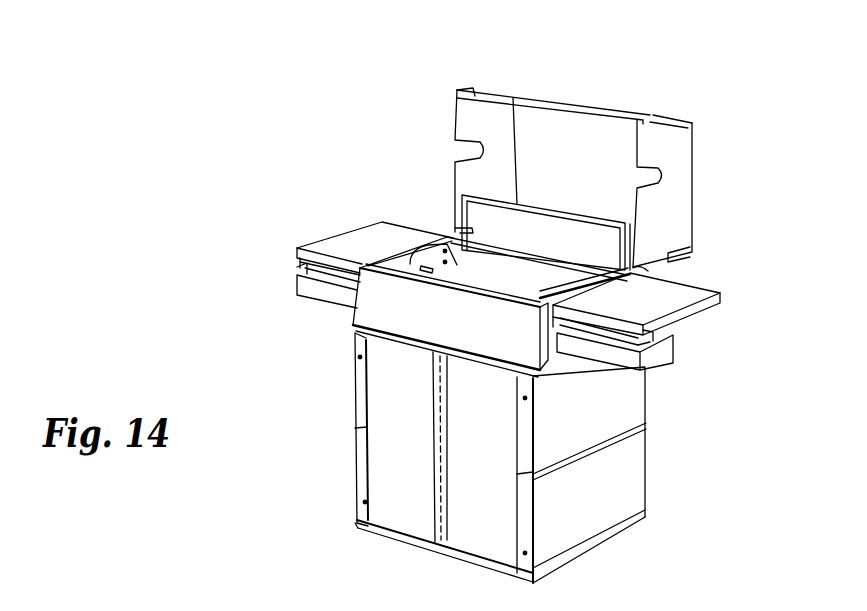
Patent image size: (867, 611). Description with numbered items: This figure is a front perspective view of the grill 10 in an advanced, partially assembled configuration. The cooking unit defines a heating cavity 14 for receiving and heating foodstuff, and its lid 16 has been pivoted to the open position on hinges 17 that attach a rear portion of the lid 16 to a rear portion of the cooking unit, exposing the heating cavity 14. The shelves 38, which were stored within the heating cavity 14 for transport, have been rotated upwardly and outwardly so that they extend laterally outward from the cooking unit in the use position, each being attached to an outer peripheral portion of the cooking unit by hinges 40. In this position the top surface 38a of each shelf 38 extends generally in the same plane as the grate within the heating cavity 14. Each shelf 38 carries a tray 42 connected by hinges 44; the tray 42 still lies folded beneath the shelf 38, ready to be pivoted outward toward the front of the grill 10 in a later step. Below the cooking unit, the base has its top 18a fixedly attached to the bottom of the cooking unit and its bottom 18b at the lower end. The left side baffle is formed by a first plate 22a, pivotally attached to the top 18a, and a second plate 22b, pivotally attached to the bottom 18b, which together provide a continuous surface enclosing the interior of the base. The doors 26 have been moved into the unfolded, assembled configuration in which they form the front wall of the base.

The grill 10 is at (636, 62).
The lid 16 is at (540, 97).
The heating cavity 14 is at (568, 244).
The hinges 17 is at (453, 228).
The shelves 38 is at (516, 281).
The top surface 38a is at (377, 233).
The hinges 40 is at (385, 256).
The tray 42 is at (300, 283).
The hinges 44 is at (650, 333).
The top 18a is at (357, 333).
The first plate 22a is at (360, 402).
The second plate 22b is at (360, 488).
The bottom 18b is at (360, 527).
The doors 26 is at (413, 522).